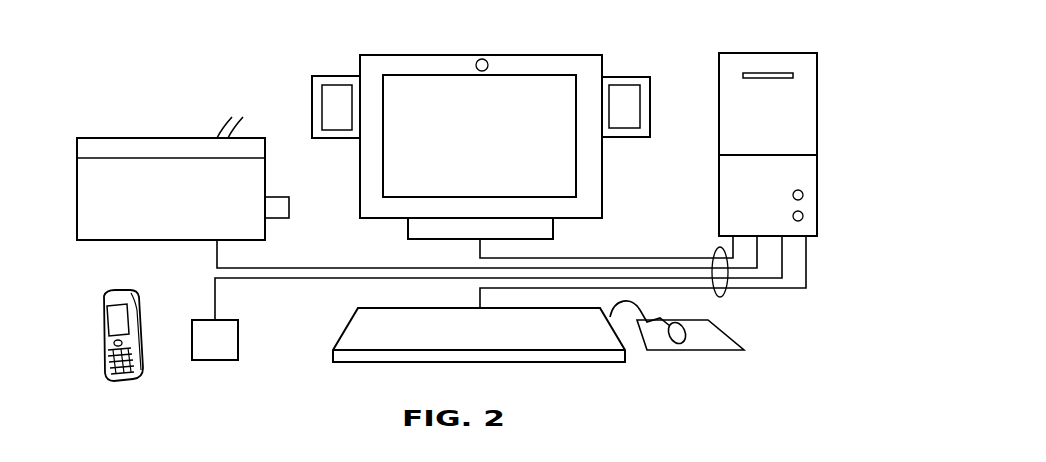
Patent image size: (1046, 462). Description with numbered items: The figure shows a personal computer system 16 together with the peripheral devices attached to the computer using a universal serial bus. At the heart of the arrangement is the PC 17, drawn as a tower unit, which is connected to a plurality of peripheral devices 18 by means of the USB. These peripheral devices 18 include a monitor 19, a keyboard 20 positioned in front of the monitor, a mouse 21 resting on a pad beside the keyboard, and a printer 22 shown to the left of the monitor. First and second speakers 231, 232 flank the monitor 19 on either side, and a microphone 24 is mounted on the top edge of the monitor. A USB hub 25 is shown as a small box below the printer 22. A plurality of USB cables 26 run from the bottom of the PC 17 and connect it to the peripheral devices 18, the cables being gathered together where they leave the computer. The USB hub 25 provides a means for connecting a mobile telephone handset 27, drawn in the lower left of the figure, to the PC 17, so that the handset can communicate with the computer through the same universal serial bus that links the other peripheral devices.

The PC system 16 is at (774, 367).
The PC 17 is at (750, 203).
The peripheral devices 18 is at (617, 210).
The monitor 19 is at (552, 155).
The keyboard 20 is at (545, 333).
The mouse 21 is at (685, 338).
The printer 22 is at (170, 213).
The first speaker 231 is at (340, 92).
The second speaker 232 is at (622, 88).
The microphone 24 is at (490, 61).
The USB hub 25 is at (213, 335).
The USB cables 26 is at (728, 295).
The mobile telephone handset 27 is at (130, 375).